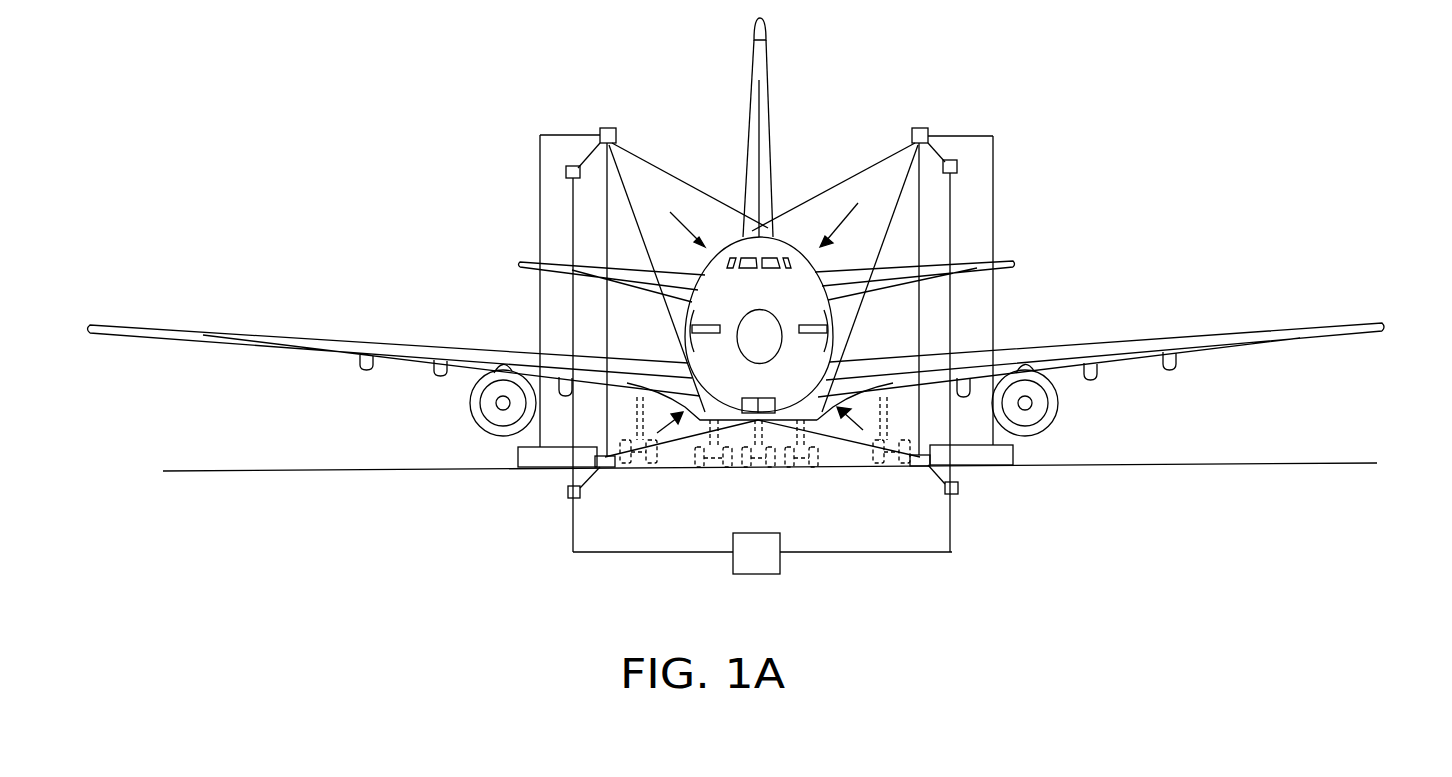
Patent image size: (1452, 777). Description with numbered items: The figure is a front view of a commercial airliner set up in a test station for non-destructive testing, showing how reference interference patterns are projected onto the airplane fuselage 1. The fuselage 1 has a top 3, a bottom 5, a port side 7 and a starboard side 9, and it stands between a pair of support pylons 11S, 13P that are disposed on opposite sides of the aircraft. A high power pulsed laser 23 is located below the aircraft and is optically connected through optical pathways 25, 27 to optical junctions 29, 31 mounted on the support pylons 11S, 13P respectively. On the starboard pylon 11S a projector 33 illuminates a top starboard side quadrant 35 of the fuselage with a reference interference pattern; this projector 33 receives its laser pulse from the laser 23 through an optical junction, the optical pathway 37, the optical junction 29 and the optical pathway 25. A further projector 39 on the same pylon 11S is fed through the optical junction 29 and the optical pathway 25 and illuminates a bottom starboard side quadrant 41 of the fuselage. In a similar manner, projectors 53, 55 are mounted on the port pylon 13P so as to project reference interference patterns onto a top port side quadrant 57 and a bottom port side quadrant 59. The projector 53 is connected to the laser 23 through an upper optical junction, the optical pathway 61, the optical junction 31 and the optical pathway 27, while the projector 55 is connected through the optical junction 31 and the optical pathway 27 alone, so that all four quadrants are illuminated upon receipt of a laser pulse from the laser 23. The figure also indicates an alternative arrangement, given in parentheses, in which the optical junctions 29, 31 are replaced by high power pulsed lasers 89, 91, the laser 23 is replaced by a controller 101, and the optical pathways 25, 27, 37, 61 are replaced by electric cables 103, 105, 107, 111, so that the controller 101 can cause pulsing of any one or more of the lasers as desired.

The airplane fuselage 1 is at (840, 318).
The top 3 is at (773, 217).
The bottom 5 is at (760, 422).
The port side 7 is at (857, 307).
The starboard side 9 is at (667, 300).
The support pylon 11S is at (538, 155).
The support pylon 13P is at (993, 177).
The high power pulsed laser 23 is at (798, 576).
The controller 101 is at (781, 570).
The optical pathway 25 is at (653, 585).
The electric cable 103 is at (655, 552).
The optical pathway 27 is at (896, 577).
The electric cable 105 is at (925, 552).
The optical junction 29 is at (536, 507).
The high power pulsed laser 89 is at (567, 492).
The optical junction 31 is at (990, 494).
The high power pulsed laser 91 is at (958, 488).
The projector 33 is at (610, 128).
The top starboard side quadrant 35 is at (725, 256).
The optical pathway 37 is at (495, 365).
The electric cable 107 is at (572, 222).
The projector 39 is at (605, 470).
The bottom starboard side quadrant 41 is at (703, 393).
The projector 53 is at (921, 128).
The projector 55 is at (915, 468).
The top port side quadrant 57 is at (789, 248).
The bottom port side quadrant 59 is at (811, 390).
The optical pathway 61 is at (1020, 362).
The electric cable 111 is at (950, 228).